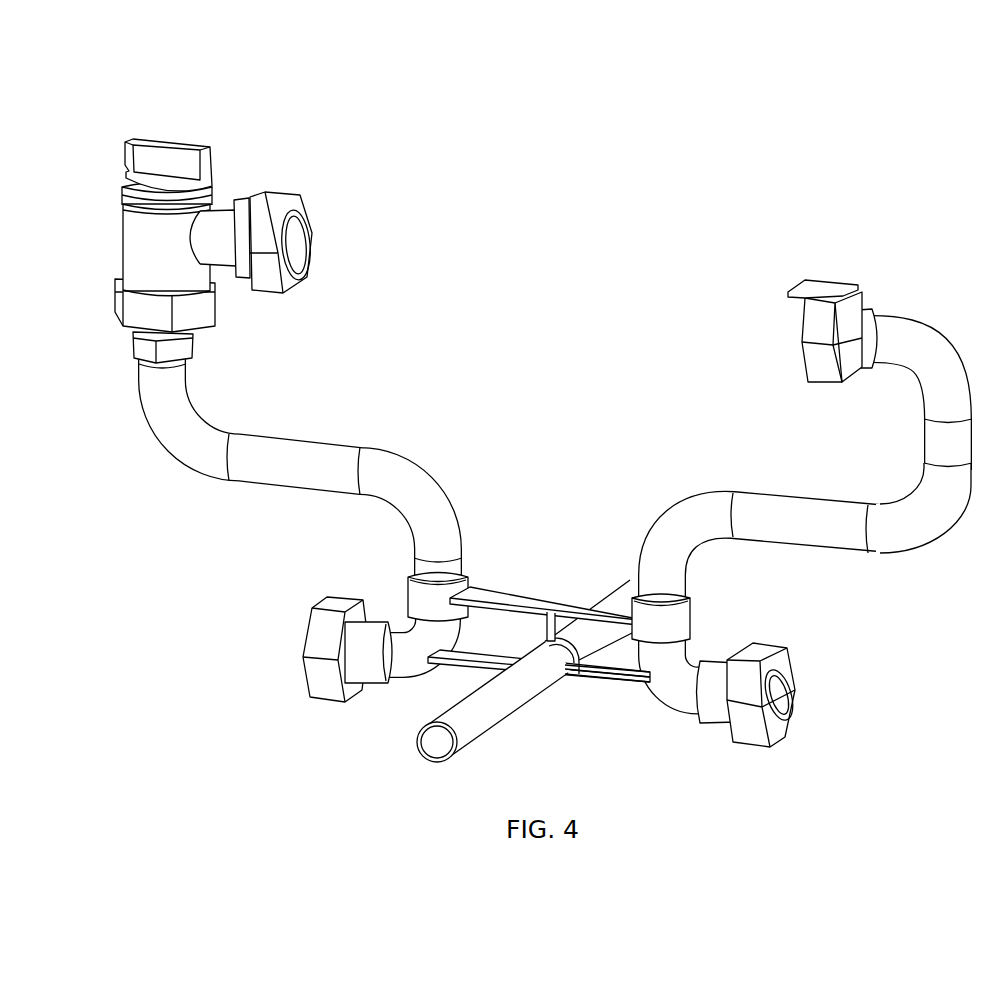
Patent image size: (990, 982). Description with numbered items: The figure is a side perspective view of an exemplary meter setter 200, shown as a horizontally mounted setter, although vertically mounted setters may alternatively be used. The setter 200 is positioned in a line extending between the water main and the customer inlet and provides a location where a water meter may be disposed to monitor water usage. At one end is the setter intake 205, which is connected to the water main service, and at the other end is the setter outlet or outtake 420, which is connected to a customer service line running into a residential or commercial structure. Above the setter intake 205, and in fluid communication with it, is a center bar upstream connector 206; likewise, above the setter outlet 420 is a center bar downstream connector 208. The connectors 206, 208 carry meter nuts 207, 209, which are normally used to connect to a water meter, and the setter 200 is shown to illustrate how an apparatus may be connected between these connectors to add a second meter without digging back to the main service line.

The setter 200 is at (778, 91).
The setter intake 205 is at (281, 664).
The center bar upstream connector 206 is at (324, 222).
The meter nut 207 is at (267, 298).
The center bar downstream connector 208 is at (846, 265).
The meter nut 209 is at (816, 372).
The setter outlet 420 is at (808, 712).